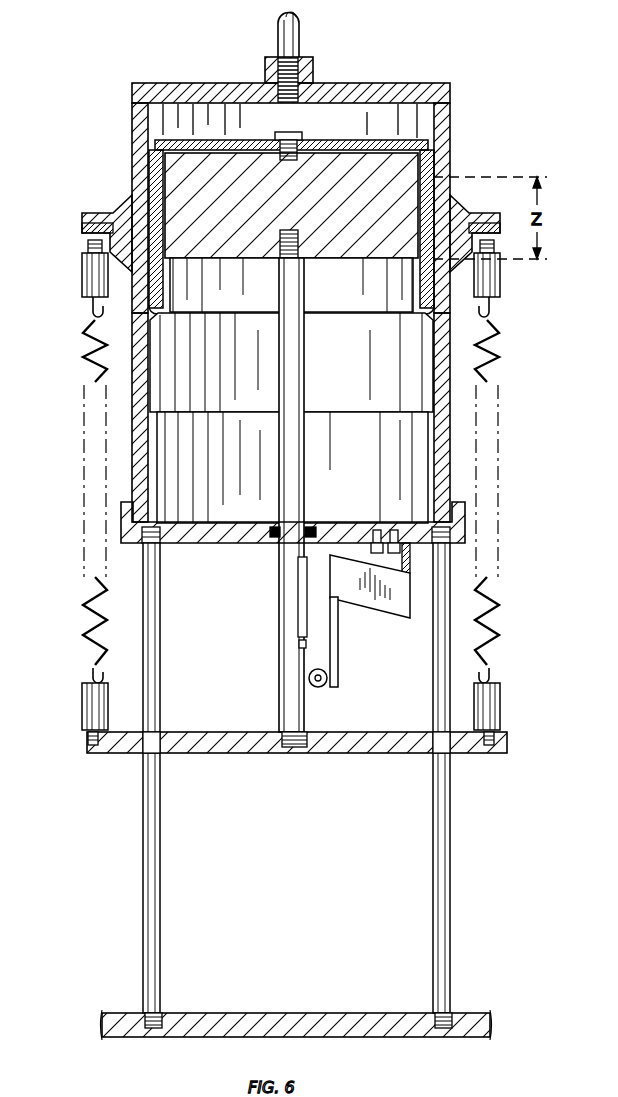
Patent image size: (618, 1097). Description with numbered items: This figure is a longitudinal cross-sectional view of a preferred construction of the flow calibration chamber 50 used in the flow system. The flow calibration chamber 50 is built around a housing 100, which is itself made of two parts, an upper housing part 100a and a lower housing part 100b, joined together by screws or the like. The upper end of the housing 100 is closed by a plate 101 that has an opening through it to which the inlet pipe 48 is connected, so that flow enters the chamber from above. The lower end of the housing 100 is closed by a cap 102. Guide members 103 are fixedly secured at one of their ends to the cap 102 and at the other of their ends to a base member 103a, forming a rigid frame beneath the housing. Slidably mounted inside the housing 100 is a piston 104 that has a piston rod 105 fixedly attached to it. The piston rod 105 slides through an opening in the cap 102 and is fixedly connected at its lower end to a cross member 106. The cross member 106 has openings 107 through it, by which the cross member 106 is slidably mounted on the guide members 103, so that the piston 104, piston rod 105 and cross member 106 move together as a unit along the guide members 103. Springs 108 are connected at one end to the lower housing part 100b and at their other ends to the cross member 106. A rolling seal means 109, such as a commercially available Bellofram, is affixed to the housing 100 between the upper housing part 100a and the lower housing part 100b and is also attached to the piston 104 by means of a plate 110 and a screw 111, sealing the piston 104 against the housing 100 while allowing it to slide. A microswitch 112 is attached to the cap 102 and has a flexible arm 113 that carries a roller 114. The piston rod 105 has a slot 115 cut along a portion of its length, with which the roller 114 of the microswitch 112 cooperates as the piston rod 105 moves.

The inlet pipe 48 is at (295, 45).
The flow calibration chamber 50 is at (480, 92).
The housing 100 is at (294, 287).
The upper housing part 100a is at (448, 158).
The lower housing part 100b is at (445, 465).
The plate 101 is at (367, 83).
The cap 102 is at (177, 543).
The guide members 103 is at (148, 788).
The base member 103a is at (272, 1013).
The piston 104 is at (175, 197).
The piston rod 105 is at (290, 373).
The cross member 106 is at (353, 730).
The openings 107 is at (152, 735).
The springs 108 is at (93, 515).
The rolling seal means 109 is at (363, 302).
The plate 110 is at (328, 141).
The screw 111 is at (290, 132).
The microswitch 112 is at (363, 597).
The flexible arm 113 is at (335, 630).
The roller 114 is at (317, 690).
The slot 115 is at (300, 598).